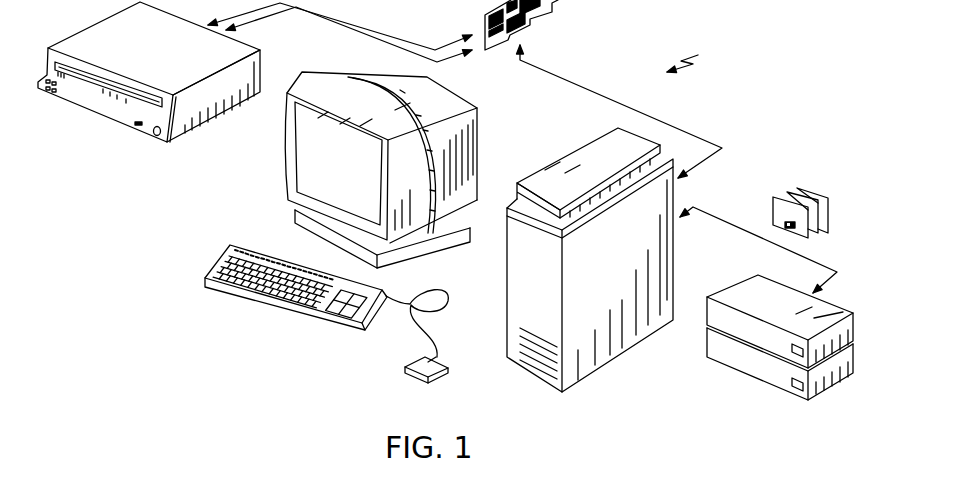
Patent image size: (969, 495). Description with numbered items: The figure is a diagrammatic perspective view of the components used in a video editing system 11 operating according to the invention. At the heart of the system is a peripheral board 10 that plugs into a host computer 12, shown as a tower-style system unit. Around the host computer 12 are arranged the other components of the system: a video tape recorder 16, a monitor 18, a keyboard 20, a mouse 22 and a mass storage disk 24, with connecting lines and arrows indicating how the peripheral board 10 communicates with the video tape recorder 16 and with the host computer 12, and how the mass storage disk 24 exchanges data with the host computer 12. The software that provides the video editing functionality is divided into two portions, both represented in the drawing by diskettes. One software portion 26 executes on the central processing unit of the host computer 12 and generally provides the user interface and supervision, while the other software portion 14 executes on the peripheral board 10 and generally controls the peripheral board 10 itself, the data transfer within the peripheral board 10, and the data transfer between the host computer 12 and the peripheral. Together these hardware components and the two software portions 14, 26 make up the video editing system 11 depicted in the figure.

The peripheral board 10 is at (554, 3).
The video editing system 11 is at (694, 53).
The host computer 12 is at (636, 299).
The software portion 14 is at (777, 195).
The video tape recorder 16 is at (171, 66).
The monitor 18 is at (345, 180).
The keyboard 20 is at (257, 302).
The mouse 22 is at (449, 372).
The mass storage disk 24 is at (789, 312).
The software portion 26 is at (823, 198).